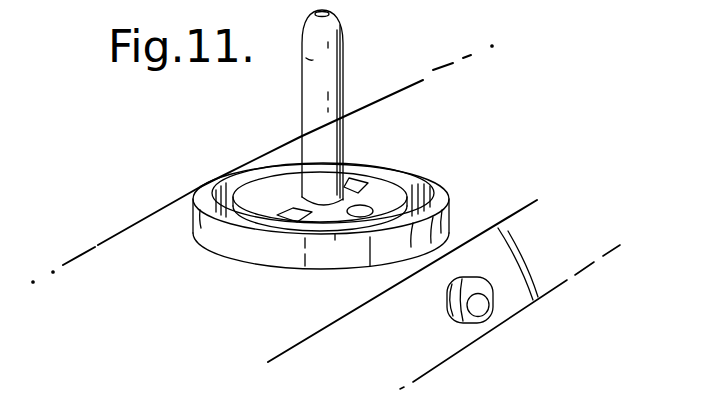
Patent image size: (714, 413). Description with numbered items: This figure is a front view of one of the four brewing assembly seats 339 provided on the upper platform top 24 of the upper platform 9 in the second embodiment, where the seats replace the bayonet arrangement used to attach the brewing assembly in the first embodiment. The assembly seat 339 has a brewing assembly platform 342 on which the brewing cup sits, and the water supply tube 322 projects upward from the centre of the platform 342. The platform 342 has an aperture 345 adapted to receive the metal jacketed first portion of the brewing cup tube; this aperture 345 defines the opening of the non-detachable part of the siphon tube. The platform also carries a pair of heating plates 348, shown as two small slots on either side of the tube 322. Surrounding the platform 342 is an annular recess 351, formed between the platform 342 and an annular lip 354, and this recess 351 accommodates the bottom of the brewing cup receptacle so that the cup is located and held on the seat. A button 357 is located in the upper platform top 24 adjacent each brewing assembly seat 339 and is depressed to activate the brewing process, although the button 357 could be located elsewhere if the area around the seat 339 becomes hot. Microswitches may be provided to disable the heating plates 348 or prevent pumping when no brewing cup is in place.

The upper platform top 24 is at (450, 97).
The water supply tube 322 is at (323, 78).
The brewing assembly seat 339 is at (184, 184).
The brewing assembly platform 342 is at (250, 202).
The aperture 345 is at (362, 213).
The heating plates 348 is at (290, 210).
The annular recess 351 is at (416, 198).
The annular lip 354 is at (237, 247).
The button 357 is at (515, 308).
The upper platform 9 is at (424, 339).